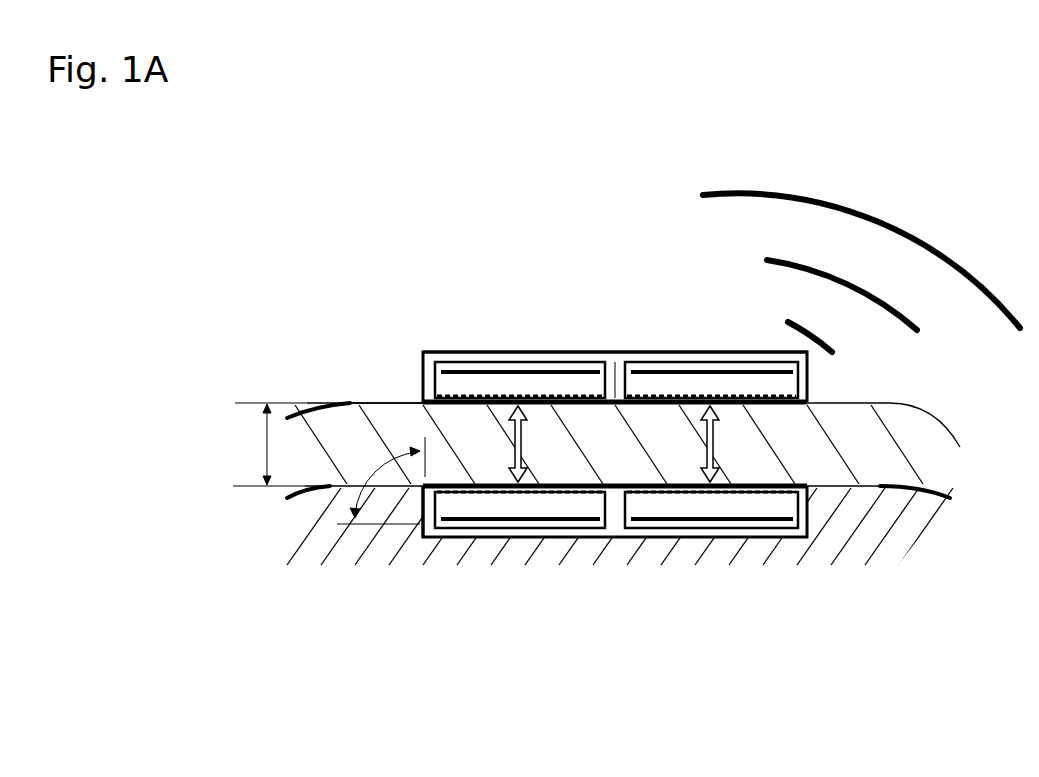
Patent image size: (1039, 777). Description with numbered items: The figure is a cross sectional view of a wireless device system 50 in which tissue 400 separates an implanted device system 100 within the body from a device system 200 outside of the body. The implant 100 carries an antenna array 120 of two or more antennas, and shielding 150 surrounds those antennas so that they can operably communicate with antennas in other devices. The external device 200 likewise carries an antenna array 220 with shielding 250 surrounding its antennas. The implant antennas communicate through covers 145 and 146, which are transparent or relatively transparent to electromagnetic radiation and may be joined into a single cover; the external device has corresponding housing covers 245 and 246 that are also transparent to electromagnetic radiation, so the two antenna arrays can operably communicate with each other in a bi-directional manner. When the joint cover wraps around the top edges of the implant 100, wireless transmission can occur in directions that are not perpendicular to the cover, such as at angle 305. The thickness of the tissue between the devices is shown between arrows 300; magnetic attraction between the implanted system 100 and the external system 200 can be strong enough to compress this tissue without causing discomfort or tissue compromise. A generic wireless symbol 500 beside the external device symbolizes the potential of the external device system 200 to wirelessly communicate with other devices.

The wireless device system 50 is at (252, 260).
The implant 100 is at (513, 545).
The antenna array 120 is at (657, 532).
The cover 145 is at (572, 485).
The cover 146 is at (778, 484).
The shielding 150 is at (437, 533).
The second device 200 is at (457, 317).
The antenna array 220 is at (682, 372).
The housing cover 245 is at (437, 393).
The housing cover 246 is at (800, 394).
The shielding 250 is at (607, 357).
The tissue thickness 300 is at (250, 450).
The angle 305 is at (362, 467).
The tissue 400 is at (325, 393).
The generic wireless symbol 500 is at (907, 187).